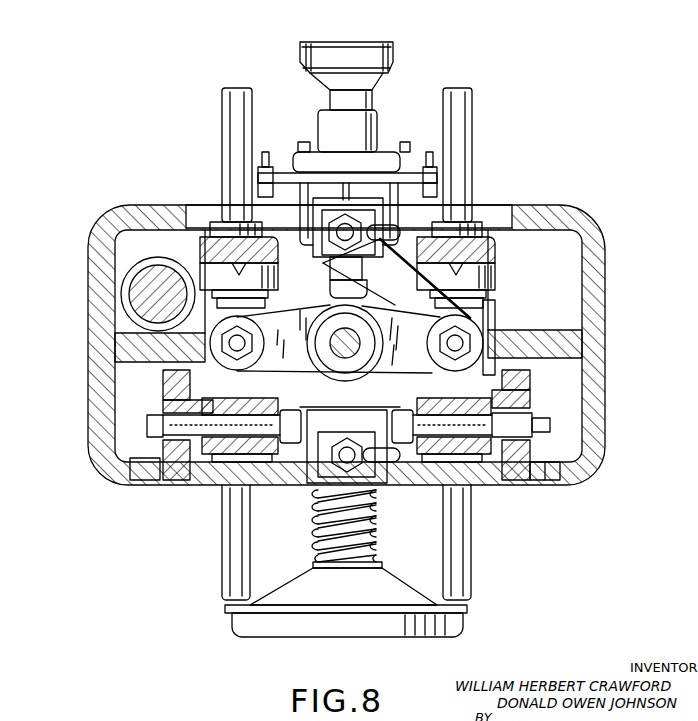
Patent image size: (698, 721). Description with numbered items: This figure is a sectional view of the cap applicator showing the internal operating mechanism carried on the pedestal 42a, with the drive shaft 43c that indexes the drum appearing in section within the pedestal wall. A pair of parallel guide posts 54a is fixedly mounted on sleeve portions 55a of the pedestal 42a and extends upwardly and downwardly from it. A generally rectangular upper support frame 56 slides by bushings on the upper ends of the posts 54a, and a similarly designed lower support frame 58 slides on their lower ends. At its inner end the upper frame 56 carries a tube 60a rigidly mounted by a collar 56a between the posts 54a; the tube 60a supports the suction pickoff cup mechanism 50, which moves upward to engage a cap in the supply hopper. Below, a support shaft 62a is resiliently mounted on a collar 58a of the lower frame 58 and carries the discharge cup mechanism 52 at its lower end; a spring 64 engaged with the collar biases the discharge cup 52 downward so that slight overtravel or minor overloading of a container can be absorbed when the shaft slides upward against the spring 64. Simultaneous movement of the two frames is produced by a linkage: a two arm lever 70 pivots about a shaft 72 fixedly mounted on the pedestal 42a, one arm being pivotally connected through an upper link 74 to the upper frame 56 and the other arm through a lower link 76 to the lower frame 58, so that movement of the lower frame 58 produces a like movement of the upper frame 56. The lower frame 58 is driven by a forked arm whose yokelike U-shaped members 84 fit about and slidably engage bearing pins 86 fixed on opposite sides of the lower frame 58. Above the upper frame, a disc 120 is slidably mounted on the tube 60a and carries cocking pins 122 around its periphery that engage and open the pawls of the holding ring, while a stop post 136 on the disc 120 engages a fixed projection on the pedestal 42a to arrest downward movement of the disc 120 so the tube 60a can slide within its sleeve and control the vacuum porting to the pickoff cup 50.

The pedestal 42a is at (565, 208).
The drive shaft 43c is at (143, 290).
The suction pickoff cup mechanism 50 is at (420, 55).
The discharge cup mechanism 52 is at (430, 592).
The parallel guide posts 54a is at (227, 127).
The sleeve portions 55a is at (483, 308).
The upper support frame 56 is at (305, 259).
The collar 56a is at (373, 210).
The lower support frame 58 is at (298, 452).
The collar 58a is at (388, 472).
The tube 60a is at (368, 98).
The support shaft 62a is at (372, 535).
The spring 64 is at (340, 520).
The two arm lever 70 is at (297, 316).
The shaft 72 is at (323, 372).
The upper link 74 is at (480, 294).
The lower link 76 is at (313, 402).
The yokelike U-shaped members 84 is at (147, 412).
The bearing pins 86 is at (150, 430).
The disc 120 is at (410, 170).
The cocking pins 122 is at (266, 155).
The stop post 136 is at (303, 197).